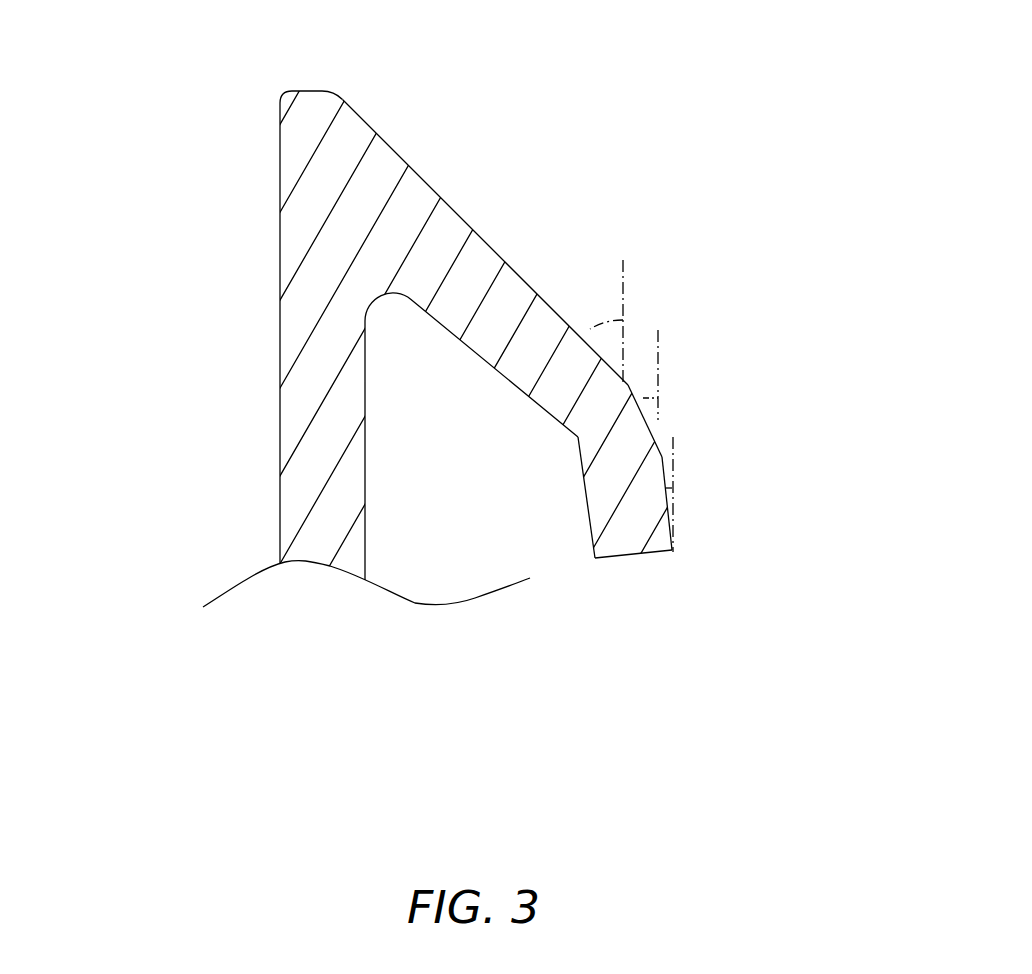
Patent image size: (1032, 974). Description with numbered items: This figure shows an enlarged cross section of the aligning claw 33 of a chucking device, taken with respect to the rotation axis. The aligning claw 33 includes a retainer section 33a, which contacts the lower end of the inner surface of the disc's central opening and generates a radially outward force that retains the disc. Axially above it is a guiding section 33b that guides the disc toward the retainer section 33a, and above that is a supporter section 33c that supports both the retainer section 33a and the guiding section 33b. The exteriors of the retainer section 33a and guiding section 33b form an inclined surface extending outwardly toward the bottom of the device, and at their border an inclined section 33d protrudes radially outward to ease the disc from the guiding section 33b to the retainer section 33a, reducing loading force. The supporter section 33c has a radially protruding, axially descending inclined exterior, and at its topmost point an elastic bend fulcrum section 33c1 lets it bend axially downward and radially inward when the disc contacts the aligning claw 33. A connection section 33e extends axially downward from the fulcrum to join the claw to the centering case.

The aligning claw 33 is at (62, 84).
The retainer section 33a is at (628, 525).
The guiding section 33b is at (583, 470).
The supporter section 33c is at (440, 230).
The elastic bend fulcrum section 33c1 is at (340, 96).
The inclined section 33d is at (660, 458).
The connection section 33e is at (305, 392).